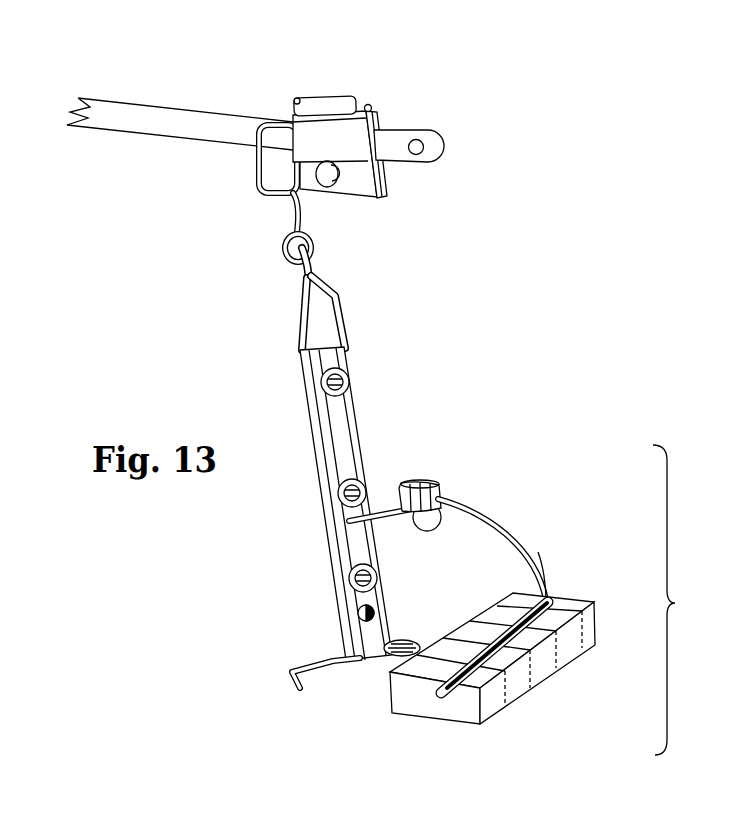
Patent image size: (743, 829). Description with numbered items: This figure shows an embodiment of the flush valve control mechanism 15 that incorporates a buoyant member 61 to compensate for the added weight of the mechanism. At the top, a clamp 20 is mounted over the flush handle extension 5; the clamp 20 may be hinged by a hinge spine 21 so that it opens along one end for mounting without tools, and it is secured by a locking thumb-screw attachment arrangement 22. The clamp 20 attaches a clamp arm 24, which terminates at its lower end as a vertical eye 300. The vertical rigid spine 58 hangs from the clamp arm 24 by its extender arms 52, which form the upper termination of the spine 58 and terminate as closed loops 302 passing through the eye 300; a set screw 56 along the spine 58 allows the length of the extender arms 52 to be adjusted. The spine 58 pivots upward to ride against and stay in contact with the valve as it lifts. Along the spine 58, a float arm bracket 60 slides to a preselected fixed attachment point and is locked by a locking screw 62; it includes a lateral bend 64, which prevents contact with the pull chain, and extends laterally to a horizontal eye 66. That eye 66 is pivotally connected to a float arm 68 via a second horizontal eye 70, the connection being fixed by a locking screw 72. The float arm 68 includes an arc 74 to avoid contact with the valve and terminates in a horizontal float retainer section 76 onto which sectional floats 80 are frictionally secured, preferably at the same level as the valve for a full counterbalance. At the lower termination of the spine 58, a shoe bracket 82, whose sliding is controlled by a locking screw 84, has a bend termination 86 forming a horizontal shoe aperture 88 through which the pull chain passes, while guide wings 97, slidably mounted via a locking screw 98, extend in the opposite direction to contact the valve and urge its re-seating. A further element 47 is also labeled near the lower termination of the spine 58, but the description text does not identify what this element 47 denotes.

The flush handle extension 5 is at (141, 112).
The flush valve control mechanism 15 is at (657, 299).
The clamp 20 is at (380, 123).
The hinge spine 21 is at (329, 98).
The locking thumb-screw attachment arrangement 22 is at (330, 187).
The clamp arm 24 is at (256, 163).
The vertical eye 300 is at (284, 247).
The closed loops 302 is at (318, 253).
The extender arm 52 is at (340, 317).
The set screw 56 is at (349, 367).
The vertical rigid spine 58 is at (355, 410).
The float arm bracket 60 is at (378, 510).
The locking screw 62 is at (362, 515).
The lateral bend 64 is at (424, 482).
The horizontal eye 66 is at (415, 525).
The float arm 68 is at (443, 504).
The second horizontal eye 70 is at (442, 503).
The locking screw 72 is at (444, 527).
The arc 74 is at (537, 550).
The horizontal float retainer section 76 is at (517, 695).
The sectional floats 80 is at (560, 670).
The buoyant apparatus 61 is at (730, 624).
The shoe bracket 82 is at (393, 638).
The locking screw 84 is at (335, 575).
The bend termination 86 is at (387, 657).
The horizontal shoe aperture 88 is at (387, 660).
The guide wings 97 is at (287, 685).
The locking screw 98 is at (357, 610).
The pad 47 is at (407, 643).